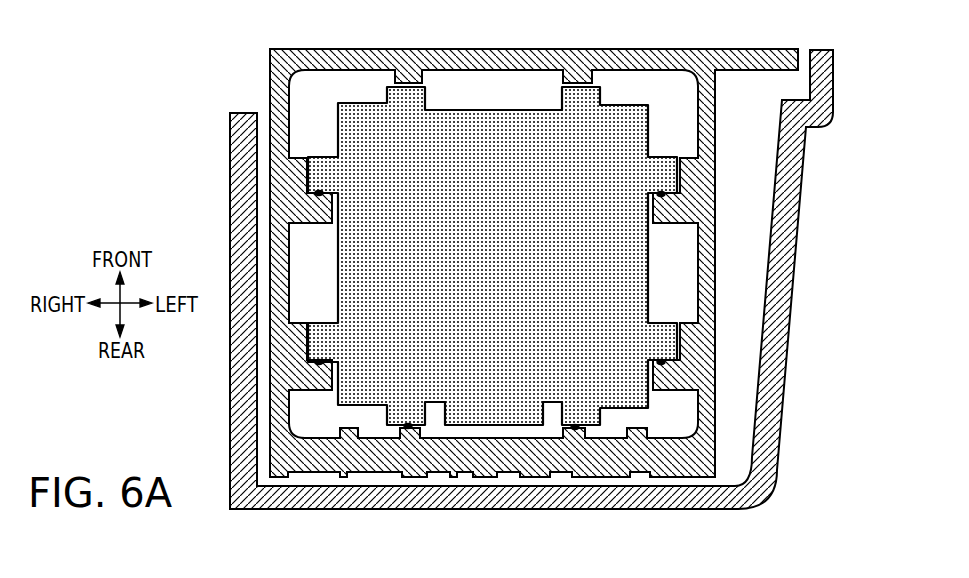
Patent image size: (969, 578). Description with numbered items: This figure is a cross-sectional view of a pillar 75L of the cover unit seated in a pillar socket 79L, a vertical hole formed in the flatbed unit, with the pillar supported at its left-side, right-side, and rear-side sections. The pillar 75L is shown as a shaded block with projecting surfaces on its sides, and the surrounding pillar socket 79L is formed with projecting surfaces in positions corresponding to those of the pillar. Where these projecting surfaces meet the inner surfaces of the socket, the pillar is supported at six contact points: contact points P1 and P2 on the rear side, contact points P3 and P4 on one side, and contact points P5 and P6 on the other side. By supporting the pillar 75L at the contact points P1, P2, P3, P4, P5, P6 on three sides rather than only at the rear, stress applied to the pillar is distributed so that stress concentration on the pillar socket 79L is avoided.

The pillar 75L is at (374, 113).
The pillar socket 79L is at (644, 73).
The contact point P1 is at (407, 428).
The contact point P2 is at (577, 428).
The contact point P3 is at (662, 194).
The contact point P4 is at (663, 362).
The contact point P5 is at (318, 193).
The contact point P6 is at (318, 362).